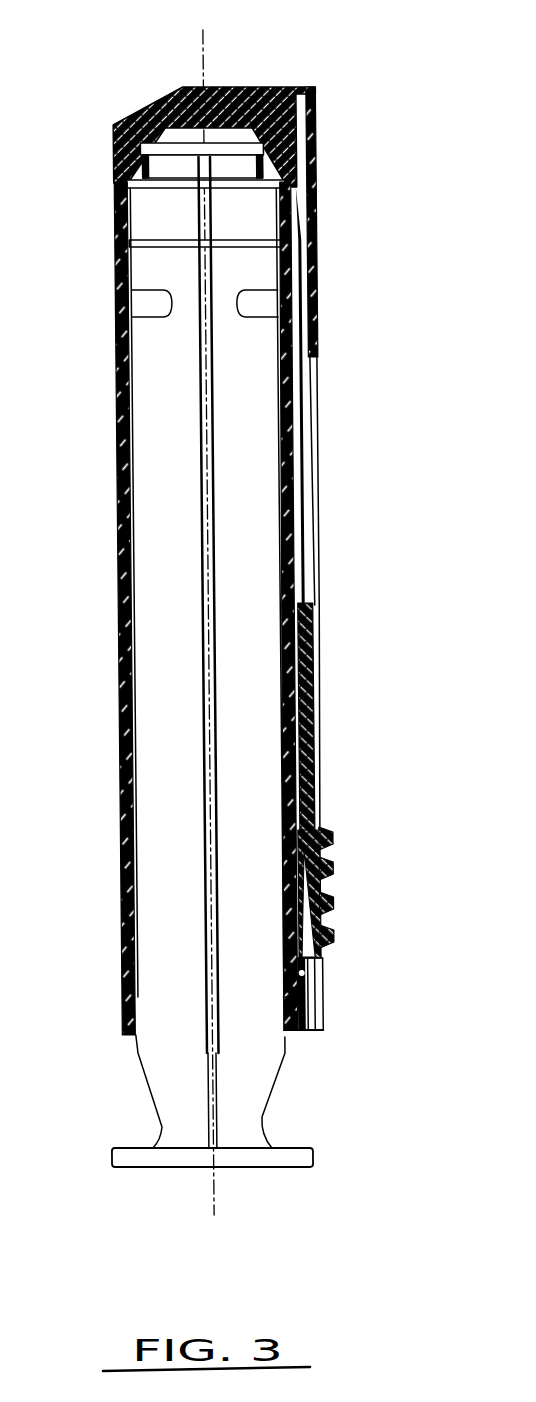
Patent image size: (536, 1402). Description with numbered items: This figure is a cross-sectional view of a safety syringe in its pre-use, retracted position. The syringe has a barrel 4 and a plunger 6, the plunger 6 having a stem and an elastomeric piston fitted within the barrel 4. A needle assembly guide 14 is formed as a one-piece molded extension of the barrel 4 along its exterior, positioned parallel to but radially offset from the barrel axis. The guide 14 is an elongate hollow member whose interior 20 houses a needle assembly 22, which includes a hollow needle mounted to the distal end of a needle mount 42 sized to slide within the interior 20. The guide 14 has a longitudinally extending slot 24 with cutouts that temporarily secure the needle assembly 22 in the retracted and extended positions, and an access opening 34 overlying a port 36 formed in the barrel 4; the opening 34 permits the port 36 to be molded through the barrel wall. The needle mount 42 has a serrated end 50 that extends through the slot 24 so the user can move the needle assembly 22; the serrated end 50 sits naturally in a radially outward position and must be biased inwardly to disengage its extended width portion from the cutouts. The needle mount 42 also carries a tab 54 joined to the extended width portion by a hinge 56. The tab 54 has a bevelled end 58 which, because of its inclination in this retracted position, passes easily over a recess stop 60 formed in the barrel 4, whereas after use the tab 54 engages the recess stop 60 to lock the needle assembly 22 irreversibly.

The barrel 4 is at (103, 595).
The plunger 6 is at (158, 748).
The needle assembly guide 14 is at (335, 320).
The interior 20 is at (297, 176).
The needle assembly 22 is at (330, 622).
The slot 24 is at (312, 458).
The access opening 34 is at (314, 128).
The port 36 is at (308, 98).
The needle mount 42 is at (330, 828).
The serrated end 50 is at (332, 886).
The tab 54 is at (313, 982).
The hinge 56 is at (317, 983).
The bevelled end 58 is at (281, 998).
The recess stop 60 is at (297, 967).